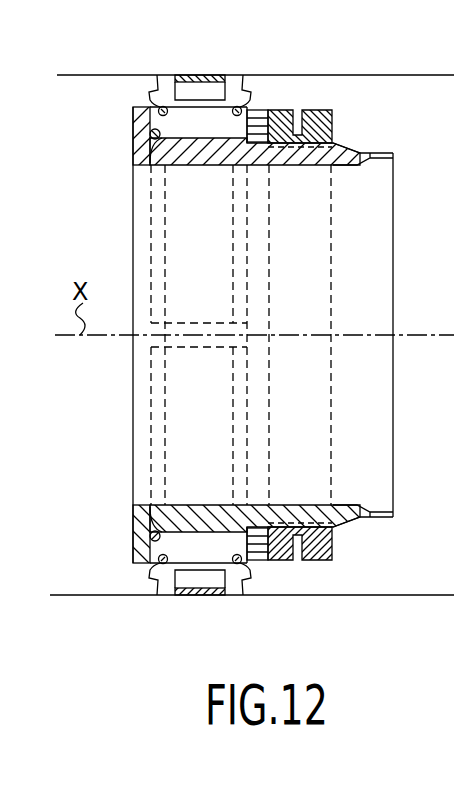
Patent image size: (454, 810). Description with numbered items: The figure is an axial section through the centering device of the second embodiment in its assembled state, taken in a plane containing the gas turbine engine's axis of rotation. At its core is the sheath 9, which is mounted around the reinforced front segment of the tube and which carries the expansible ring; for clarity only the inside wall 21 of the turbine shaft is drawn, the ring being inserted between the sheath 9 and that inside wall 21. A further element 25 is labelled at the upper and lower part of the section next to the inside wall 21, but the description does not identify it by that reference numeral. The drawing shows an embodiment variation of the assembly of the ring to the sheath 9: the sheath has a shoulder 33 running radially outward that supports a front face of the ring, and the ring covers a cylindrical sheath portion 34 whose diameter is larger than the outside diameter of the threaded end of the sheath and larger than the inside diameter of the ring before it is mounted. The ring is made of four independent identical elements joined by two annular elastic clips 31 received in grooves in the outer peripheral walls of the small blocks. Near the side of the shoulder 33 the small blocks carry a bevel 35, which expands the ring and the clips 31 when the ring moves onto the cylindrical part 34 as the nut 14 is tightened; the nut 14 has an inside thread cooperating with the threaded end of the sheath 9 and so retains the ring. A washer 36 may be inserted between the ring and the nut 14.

The sheath 9 is at (132, 175).
The nut 14 is at (336, 118).
The inside wall of the turbine shaft 21 is at (66, 81).
The bushing 25 is at (200, 76).
The annular elastic clips 31 is at (154, 96).
The shoulder 33 is at (136, 118).
The cylindrical sheath portion 34 is at (193, 153).
The bevel 35 is at (152, 142).
The washer 36 is at (262, 108).